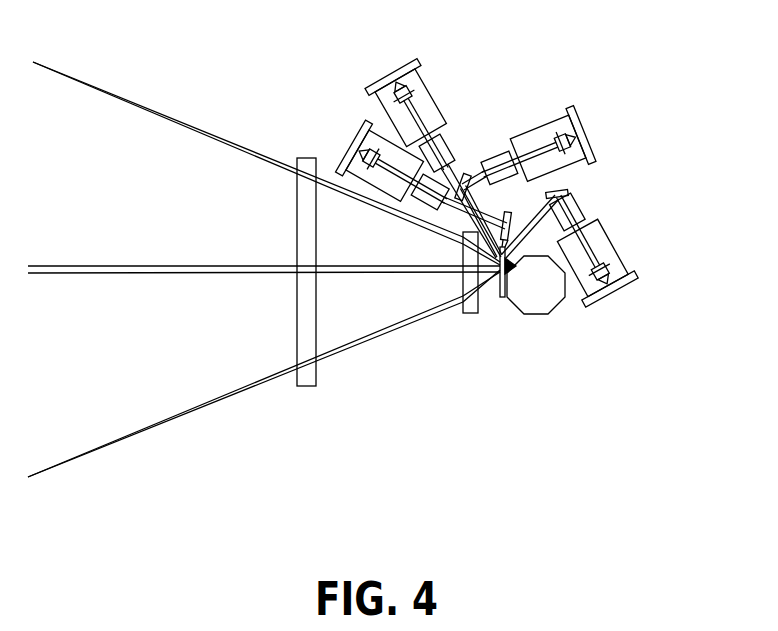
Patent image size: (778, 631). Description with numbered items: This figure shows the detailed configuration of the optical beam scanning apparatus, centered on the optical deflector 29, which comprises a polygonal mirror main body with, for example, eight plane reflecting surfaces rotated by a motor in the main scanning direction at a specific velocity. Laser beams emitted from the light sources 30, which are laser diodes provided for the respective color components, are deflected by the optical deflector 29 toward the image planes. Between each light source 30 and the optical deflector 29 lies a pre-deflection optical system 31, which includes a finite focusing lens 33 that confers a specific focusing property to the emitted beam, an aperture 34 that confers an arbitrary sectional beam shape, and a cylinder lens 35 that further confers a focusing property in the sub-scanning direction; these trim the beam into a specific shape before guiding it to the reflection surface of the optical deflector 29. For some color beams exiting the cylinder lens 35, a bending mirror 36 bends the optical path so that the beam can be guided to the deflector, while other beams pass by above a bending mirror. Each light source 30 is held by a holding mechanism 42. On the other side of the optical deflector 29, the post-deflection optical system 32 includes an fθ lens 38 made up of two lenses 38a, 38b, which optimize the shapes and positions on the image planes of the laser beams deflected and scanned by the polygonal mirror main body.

The optical deflector 29 is at (535, 316).
The light source 30 is at (629, 282).
The pre-deflection optical system 31 is at (506, 163).
The post-deflection optical system 32 is at (202, 211).
The finite focusing lens 33 is at (607, 268).
The aperture 34 is at (600, 256).
The cylinder lens 35 is at (580, 208).
The bending mirror 36 is at (570, 192).
The fθ lens 38 is at (387, 318).
The fθ lens 38a is at (316, 320).
The fθ lens 38b is at (468, 314).
The holding mechanism 42 is at (620, 297).